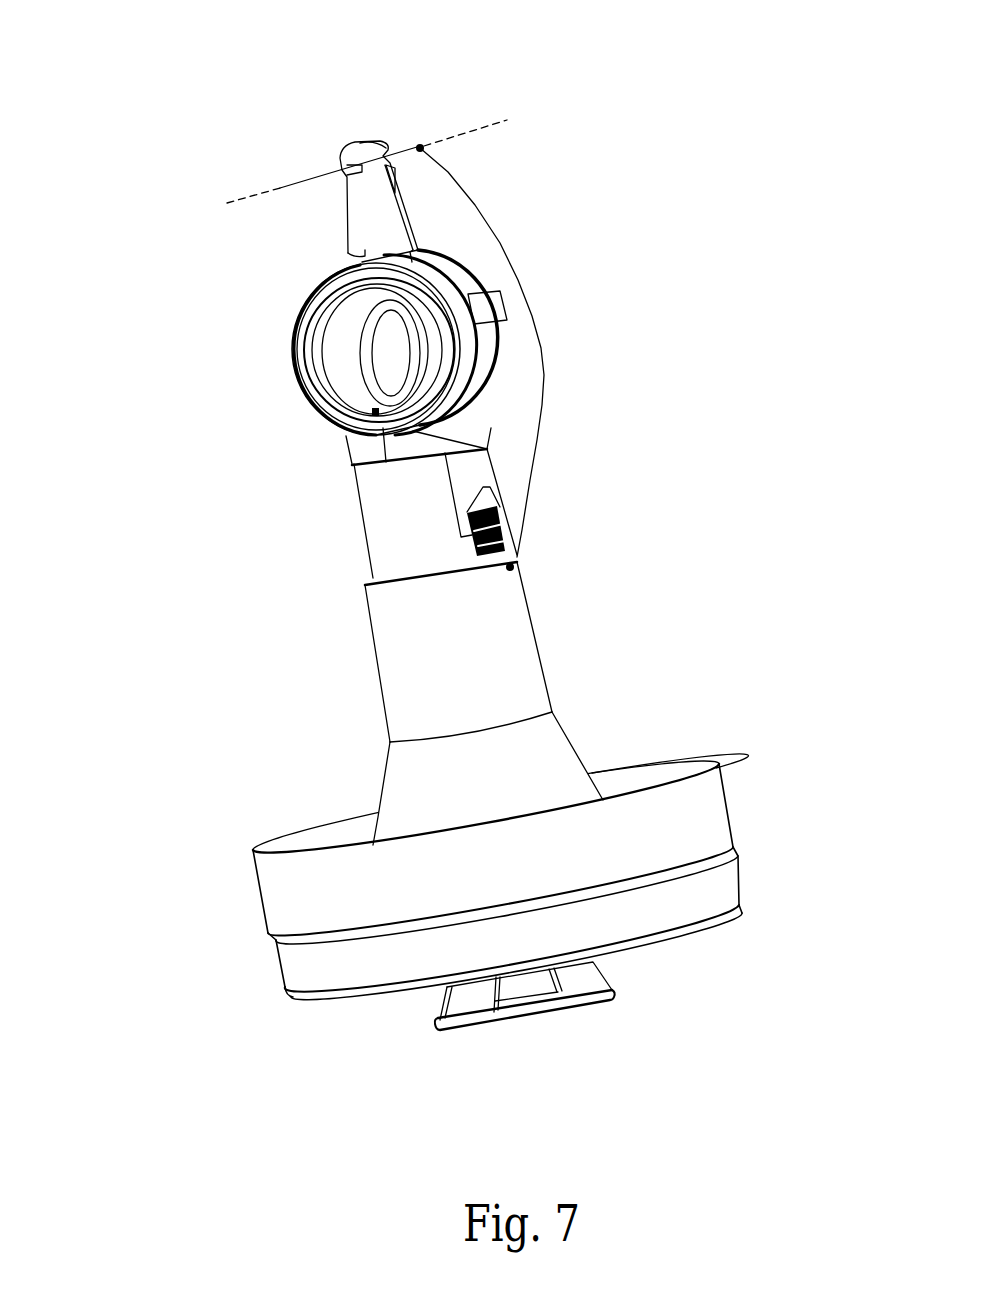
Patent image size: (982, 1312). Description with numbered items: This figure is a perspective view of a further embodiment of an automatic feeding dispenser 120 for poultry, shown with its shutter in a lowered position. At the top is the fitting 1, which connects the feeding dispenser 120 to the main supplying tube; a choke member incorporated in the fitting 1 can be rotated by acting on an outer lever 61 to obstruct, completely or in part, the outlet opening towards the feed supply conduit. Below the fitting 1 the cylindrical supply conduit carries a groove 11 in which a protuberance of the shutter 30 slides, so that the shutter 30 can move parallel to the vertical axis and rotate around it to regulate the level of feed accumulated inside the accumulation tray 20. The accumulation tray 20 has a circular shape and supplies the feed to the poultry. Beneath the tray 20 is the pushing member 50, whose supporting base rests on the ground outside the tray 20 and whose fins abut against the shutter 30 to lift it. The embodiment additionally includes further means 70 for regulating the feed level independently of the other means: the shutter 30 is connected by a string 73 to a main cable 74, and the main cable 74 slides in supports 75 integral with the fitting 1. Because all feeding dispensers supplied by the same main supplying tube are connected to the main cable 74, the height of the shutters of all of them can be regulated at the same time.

The feeding dispenser 120 is at (436, 547).
The fitting 1 is at (346, 346).
The groove 11 is at (467, 483).
The accumulation tray 20 is at (258, 987).
The shutter 30 is at (567, 688).
The pushing member 50 is at (613, 1010).
The outer lever 61 is at (481, 305).
The further means for regulating the feed level 70 is at (367, 147).
The string 73 is at (544, 368).
The main cable 74 is at (402, 153).
The supports 75 is at (367, 202).